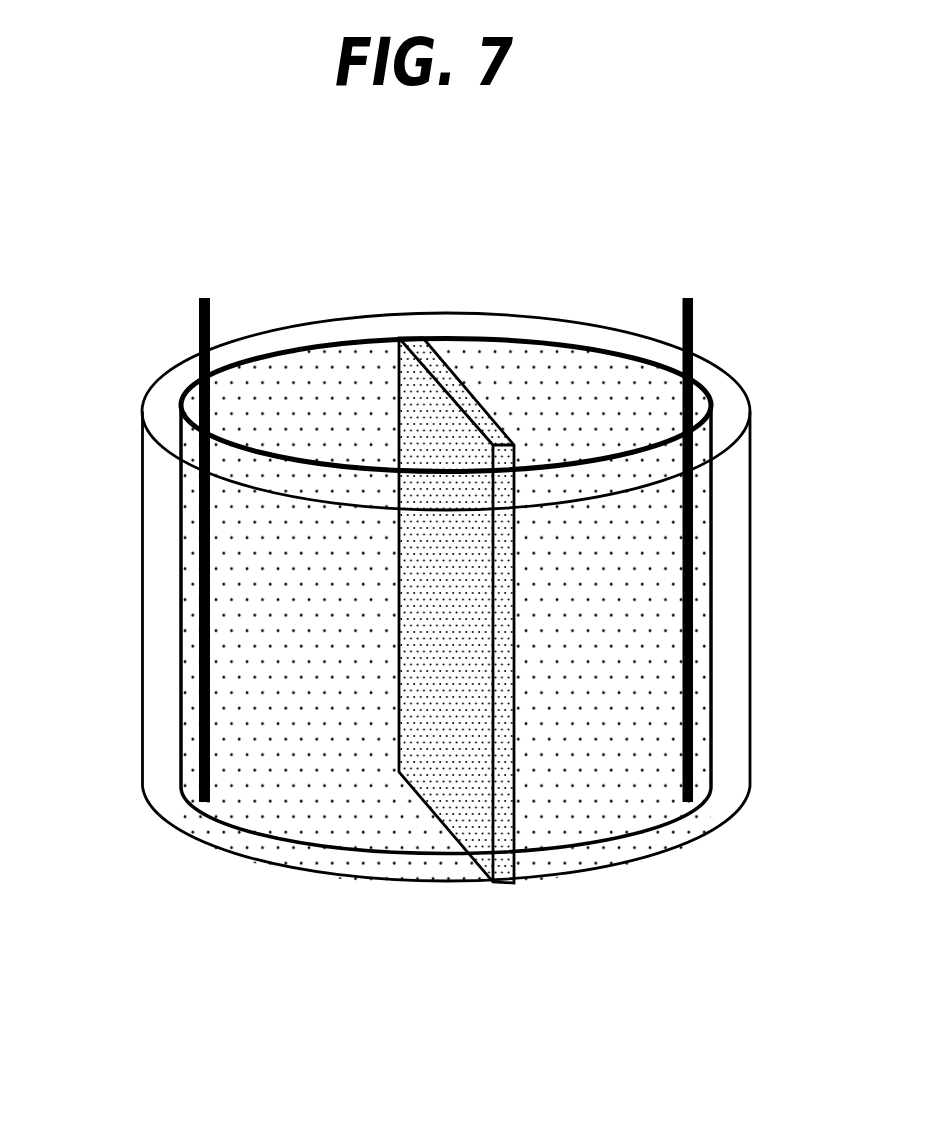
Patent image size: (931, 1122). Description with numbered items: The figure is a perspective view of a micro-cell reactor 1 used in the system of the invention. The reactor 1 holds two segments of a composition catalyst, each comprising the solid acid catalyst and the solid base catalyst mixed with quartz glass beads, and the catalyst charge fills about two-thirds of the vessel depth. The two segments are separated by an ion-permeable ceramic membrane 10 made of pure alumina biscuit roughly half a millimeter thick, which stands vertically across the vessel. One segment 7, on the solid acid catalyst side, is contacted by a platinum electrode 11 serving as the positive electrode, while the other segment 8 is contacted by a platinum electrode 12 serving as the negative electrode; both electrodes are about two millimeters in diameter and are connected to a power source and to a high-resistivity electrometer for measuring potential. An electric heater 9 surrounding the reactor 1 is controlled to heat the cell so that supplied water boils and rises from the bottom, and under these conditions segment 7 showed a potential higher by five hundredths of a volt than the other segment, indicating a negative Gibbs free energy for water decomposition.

The reactor 1 is at (750, 589).
The segment 7 is at (643, 817).
The segment 8 is at (315, 830).
The electric heater 9 is at (163, 777).
The ion-permeable ceramic membrane 10 is at (503, 775).
The platinum electrode 11 is at (688, 298).
The platinum electrode 12 is at (205, 298).